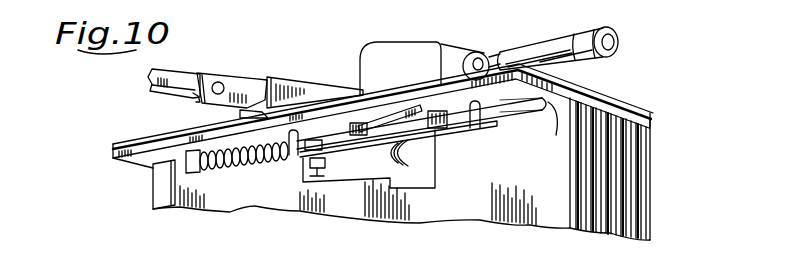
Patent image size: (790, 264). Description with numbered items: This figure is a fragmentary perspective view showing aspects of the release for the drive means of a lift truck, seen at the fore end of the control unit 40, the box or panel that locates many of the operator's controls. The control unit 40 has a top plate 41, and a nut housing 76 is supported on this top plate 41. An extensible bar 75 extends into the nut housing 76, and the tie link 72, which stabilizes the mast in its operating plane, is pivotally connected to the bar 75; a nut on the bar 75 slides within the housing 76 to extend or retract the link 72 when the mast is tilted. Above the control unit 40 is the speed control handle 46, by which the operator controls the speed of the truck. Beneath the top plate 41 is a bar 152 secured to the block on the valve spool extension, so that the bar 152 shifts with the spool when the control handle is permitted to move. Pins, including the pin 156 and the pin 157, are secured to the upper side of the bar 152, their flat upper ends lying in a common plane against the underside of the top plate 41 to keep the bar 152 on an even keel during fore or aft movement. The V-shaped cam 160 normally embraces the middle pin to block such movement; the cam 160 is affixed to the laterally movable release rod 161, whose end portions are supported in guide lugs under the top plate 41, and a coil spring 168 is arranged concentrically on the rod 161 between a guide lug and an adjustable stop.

The control unit 40 is at (636, 164).
The top plate 41 is at (600, 95).
The speed control handle 46 is at (556, 45).
The tie link 72 is at (155, 92).
The extensible bar 75 is at (233, 85).
The nut housing 76 is at (305, 80).
The bar 152 is at (450, 140).
The pin 156 is at (268, 160).
The pin 157 is at (500, 122).
The V-shaped cam 160 is at (378, 135).
The release rod 161 is at (548, 122).
The coil spring 168 is at (222, 172).